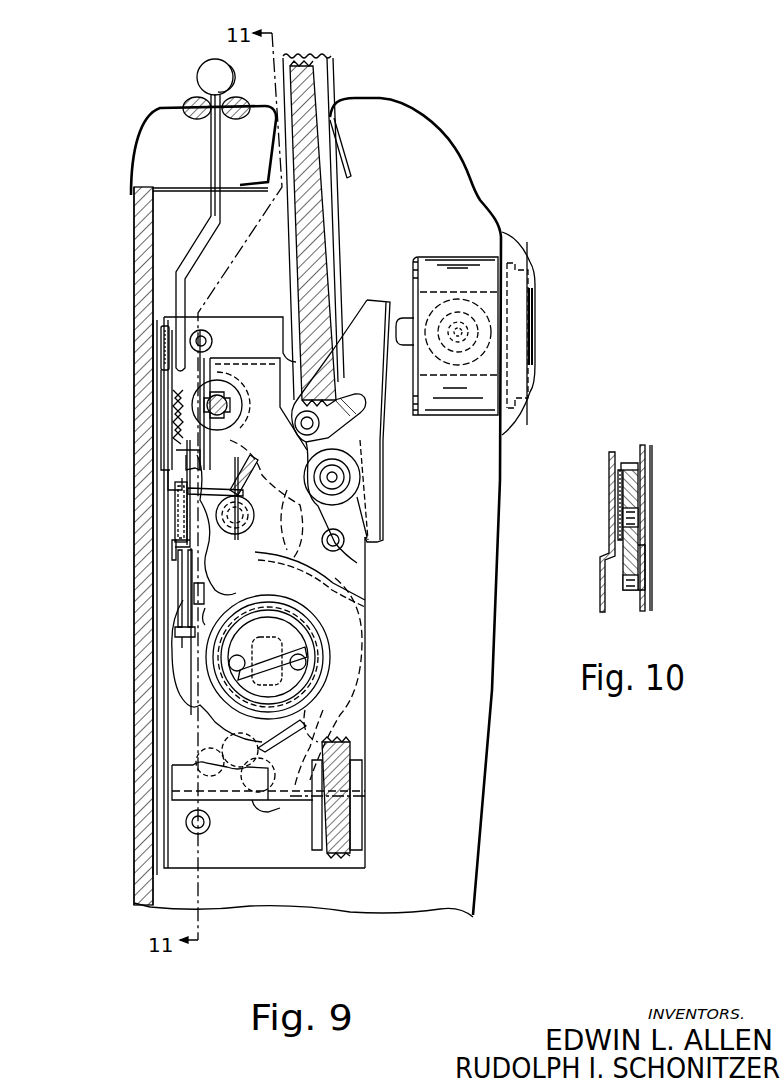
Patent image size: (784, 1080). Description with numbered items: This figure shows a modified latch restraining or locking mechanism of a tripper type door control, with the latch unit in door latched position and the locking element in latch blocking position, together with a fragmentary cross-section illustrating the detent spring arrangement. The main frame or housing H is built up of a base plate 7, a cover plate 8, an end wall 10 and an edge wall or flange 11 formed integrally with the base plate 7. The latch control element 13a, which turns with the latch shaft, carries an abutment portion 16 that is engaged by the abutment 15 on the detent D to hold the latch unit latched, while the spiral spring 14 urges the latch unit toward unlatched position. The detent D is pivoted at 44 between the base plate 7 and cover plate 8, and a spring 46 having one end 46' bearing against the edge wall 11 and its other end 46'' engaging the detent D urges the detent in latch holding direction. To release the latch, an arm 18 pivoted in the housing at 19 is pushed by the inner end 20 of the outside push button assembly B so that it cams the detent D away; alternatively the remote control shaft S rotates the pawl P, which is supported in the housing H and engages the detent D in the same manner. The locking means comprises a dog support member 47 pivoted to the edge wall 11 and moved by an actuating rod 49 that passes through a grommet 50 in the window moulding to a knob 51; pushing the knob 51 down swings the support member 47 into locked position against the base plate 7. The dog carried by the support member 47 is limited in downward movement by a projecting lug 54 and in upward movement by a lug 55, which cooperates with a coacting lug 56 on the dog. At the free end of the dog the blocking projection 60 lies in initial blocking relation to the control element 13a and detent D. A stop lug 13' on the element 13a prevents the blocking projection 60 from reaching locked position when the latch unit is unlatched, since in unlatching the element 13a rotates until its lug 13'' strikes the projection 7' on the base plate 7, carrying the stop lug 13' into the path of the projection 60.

In FIG. 9, the base plate 7 is at (266, 606).
In FIG. 10, the base plate 7 is at (662, 525).
In FIG. 9, the projection on the base plate 7' is at (307, 797).
In FIG. 9, the cover plate 8 is at (230, 792).
In FIG. 10, the cover plate 8 is at (606, 460).
In FIG. 9, the end wall 10 is at (246, 453).
In FIG. 9, the edge wall or flange 11 is at (160, 380).
In FIG. 9, the stop lug 13' is at (181, 645).
In FIG. 9, the lug on the latch control element 13'' is at (353, 732).
In FIG. 9, the latch control element 13a is at (345, 648).
In FIG. 9, the spiral spring 14 is at (303, 588).
In FIG. 9, the abutment portion of the detent 15 is at (180, 570).
In FIG. 10, the abutment portion of the detent 15 is at (632, 592).
In FIG. 9, the abutment portion of the latch control element 16 is at (196, 595).
In FIG. 9, the arm 18 is at (372, 443).
In FIG. 9, the pivot of the arm 19 is at (355, 562).
In FIG. 9, the inner end of the outside push button assembly 20 is at (404, 318).
In FIG. 9, the detent pivot 44 is at (246, 525).
In FIG. 10, the detent pivot 44 is at (640, 518).
In FIG. 9, the spring 46 is at (171, 493).
In FIG. 10, the spring 46 is at (596, 505).
In FIG. 9, the end of the spring 46' is at (141, 475).
In FIG. 9, the other end of the spring 46'' is at (319, 373).
In FIG. 10, the other end of the spring 46'' is at (664, 475).
In FIG. 9, the dog support member 47 is at (160, 432).
In FIG. 9, the actuating rod 49 is at (212, 160).
In FIG. 9, the grommet 50 is at (190, 104).
In FIG. 9, the knob 51 is at (200, 72).
In FIG. 9, the projecting lug 54 is at (178, 646).
In FIG. 9, the lug on the support member 55 is at (176, 548).
In FIG. 9, the coacting lug on the dog 56 is at (200, 545).
In FIG. 9, the blocking projection 60 is at (212, 590).
In FIG. 9, the outside push button assembly B is at (536, 334).
In FIG. 9, the detent D is at (176, 525).
In FIG. 10, the detent D is at (640, 565).
In FIG. 9, the housing H is at (366, 735).
In FIG. 9, the pawl P is at (176, 456).
In FIG. 9, the remote control shaft S is at (240, 390).